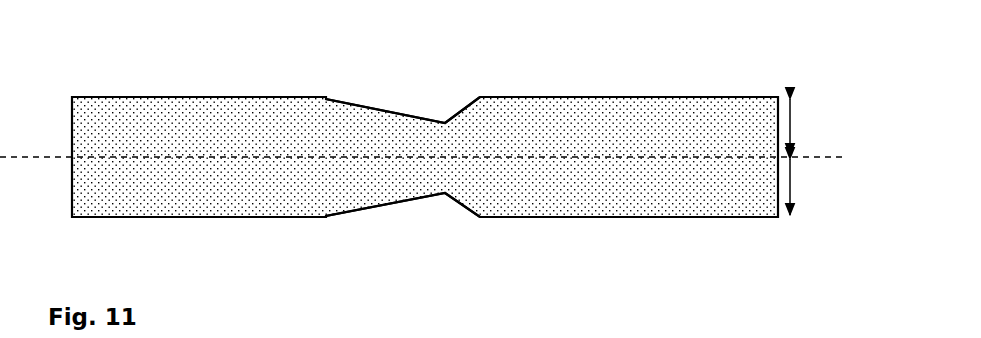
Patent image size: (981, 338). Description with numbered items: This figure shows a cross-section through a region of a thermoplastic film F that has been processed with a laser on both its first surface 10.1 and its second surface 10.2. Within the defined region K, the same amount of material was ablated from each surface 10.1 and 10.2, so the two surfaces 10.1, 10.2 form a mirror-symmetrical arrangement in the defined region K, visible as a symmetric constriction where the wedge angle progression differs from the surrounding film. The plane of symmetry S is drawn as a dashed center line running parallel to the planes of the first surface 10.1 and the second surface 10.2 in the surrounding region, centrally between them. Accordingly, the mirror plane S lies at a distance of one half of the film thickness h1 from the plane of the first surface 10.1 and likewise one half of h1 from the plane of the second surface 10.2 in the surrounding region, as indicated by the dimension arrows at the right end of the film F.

The first surface 10.1 is at (168, 98).
The second surface 10.2 is at (672, 220).
The defined region K is at (427, 94).
The thermoplastic film F is at (692, 85).
The plane of symmetry S is at (423, 146).
The film thickness h1 is at (833, 157).